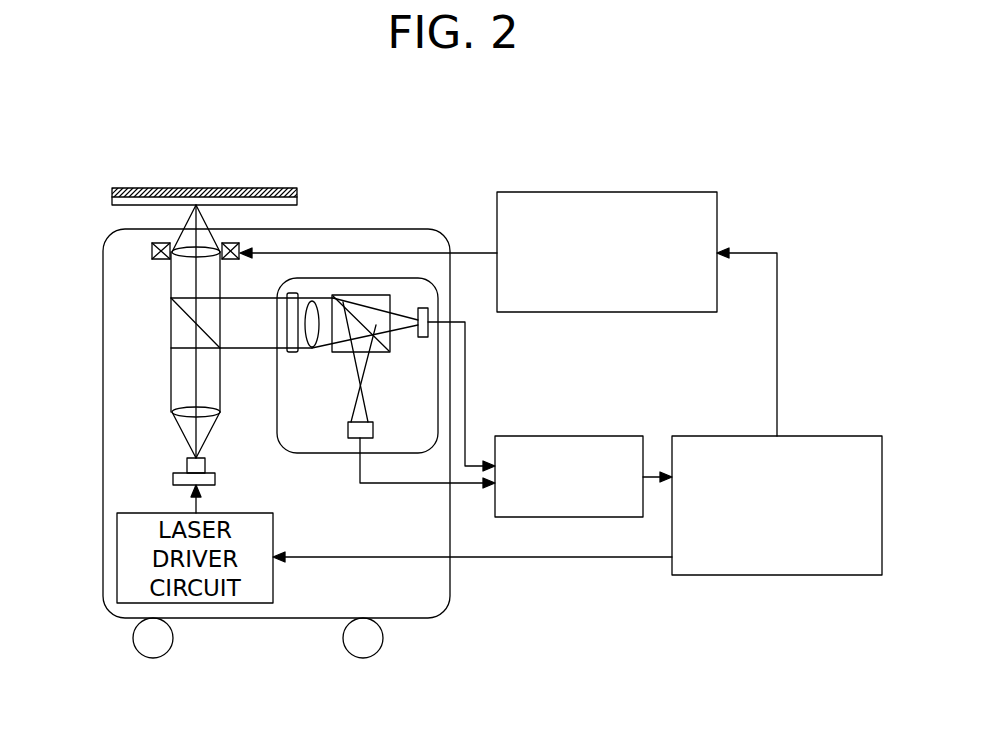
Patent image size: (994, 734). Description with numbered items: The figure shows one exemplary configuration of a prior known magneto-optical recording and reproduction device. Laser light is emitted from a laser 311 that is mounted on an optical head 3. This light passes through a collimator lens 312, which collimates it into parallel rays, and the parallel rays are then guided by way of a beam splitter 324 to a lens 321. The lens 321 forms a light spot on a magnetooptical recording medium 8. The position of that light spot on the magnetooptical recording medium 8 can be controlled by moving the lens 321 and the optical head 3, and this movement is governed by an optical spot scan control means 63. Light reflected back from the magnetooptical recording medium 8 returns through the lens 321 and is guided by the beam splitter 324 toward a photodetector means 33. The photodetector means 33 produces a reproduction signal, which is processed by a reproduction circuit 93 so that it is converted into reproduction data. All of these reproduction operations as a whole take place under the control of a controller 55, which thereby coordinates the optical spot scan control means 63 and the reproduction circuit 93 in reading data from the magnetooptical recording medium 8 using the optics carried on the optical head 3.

The optical head 3 is at (450, 580).
The magnetooptical recording medium 8 is at (112, 196).
The lens 321 is at (176, 259).
The beam splitter 324 is at (180, 325).
The collimator lens 312 is at (222, 412).
The laser 311 is at (187, 465).
The photodetector means 33 is at (327, 455).
The reproduction circuit 93 is at (566, 436).
The controller 55 is at (775, 575).
The optical spot scan control means 63 is at (606, 192).